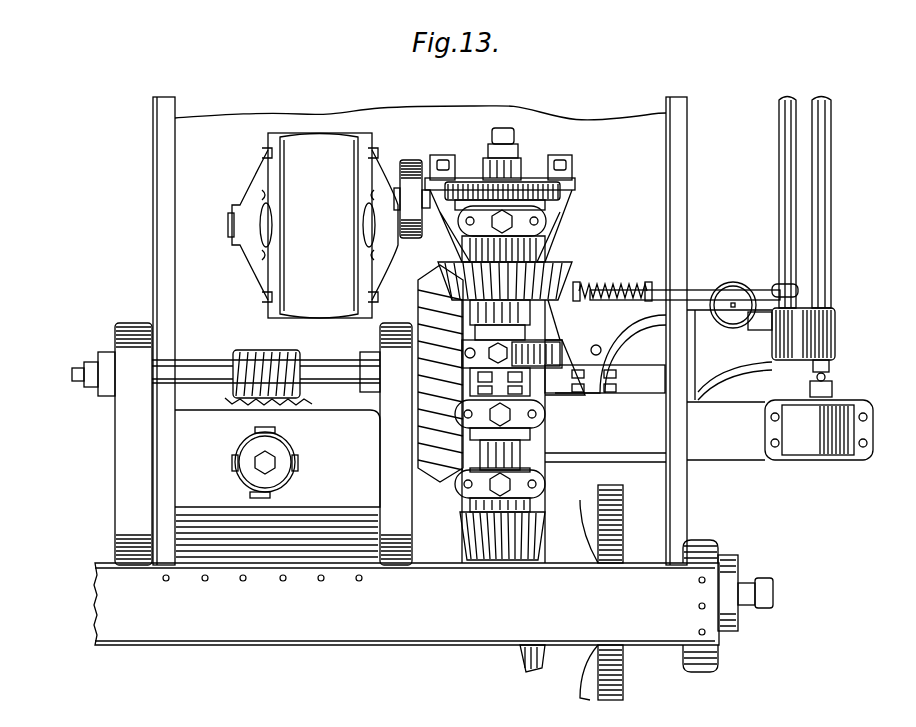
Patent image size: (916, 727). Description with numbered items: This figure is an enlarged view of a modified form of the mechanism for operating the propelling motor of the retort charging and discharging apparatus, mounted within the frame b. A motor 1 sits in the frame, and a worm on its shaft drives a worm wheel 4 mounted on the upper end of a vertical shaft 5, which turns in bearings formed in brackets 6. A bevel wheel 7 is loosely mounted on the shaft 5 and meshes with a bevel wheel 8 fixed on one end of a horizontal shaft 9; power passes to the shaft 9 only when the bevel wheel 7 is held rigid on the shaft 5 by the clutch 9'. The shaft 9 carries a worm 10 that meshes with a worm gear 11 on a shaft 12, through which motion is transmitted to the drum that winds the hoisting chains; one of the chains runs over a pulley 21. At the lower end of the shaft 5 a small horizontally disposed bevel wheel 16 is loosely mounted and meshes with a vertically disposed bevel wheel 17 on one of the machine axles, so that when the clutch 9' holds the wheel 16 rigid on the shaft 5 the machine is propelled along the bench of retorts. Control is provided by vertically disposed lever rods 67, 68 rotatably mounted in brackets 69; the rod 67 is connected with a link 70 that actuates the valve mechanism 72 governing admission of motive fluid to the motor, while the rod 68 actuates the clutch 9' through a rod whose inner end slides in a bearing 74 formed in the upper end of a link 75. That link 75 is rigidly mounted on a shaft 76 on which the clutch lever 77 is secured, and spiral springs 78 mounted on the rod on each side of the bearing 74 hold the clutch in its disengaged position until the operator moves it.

The motor 1 is at (313, 225).
The worm wheel 4 is at (560, 186).
The shaft 5 is at (497, 452).
The brackets 6 is at (528, 480).
The bevel wheel 7 is at (440, 276).
The bevel wheel 8 is at (425, 314).
The shaft 9 is at (266, 360).
The clutch 9' is at (544, 394).
The worm 10 is at (243, 355).
The worm gear 11 is at (252, 400).
The shaft 12 is at (272, 460).
The bevel wheel 16 is at (480, 548).
The bevel wheel 17 is at (524, 672).
The pulley 21 is at (700, 290).
The lever rod 67 is at (832, 192).
The lever rod 68 is at (782, 186).
The brackets 69 is at (836, 338).
The link 70 is at (832, 392).
The valve mechanism 72 is at (820, 440).
The bearing 74 is at (612, 284).
The link 75 is at (598, 318).
The shaft 76 is at (602, 350).
The clutch lever 77 is at (531, 354).
The spiral springs 78 is at (577, 282).
The frame b is at (160, 185).